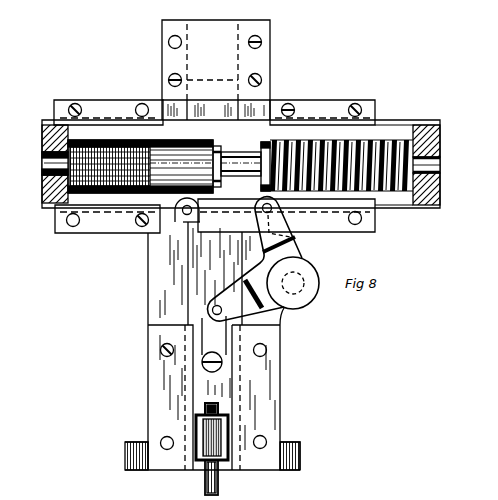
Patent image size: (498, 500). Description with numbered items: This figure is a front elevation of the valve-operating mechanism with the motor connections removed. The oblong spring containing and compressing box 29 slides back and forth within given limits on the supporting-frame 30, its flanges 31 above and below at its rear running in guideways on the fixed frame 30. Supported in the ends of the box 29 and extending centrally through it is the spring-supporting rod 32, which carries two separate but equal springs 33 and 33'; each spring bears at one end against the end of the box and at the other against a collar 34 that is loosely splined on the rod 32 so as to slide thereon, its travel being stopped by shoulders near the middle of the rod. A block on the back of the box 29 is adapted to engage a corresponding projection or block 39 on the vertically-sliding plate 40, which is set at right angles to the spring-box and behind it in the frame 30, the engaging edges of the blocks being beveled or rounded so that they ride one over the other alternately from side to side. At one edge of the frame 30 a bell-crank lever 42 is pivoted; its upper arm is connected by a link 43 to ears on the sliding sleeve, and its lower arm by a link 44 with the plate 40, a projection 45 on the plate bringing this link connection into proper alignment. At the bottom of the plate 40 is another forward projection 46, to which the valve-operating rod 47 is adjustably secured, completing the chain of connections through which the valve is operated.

The spring containing and compressing box 29 is at (367, 162).
The supporting-frame 30 is at (147, 255).
The flanges 31 is at (425, 124).
The spring-supporting rod 32 is at (447, 166).
The spring 33 is at (140, 139).
The spring 33' is at (407, 149).
The collar 34 is at (197, 129).
The projection or block 39 is at (218, 189).
The vertically-sliding plate 40 is at (203, 266).
The bell-crank lever 42 is at (306, 252).
The link 43 is at (215, 219).
The link 44 is at (217, 337).
The projection 45 is at (223, 367).
The forward projection 46 is at (195, 447).
The valve-operating rod 47 is at (222, 487).